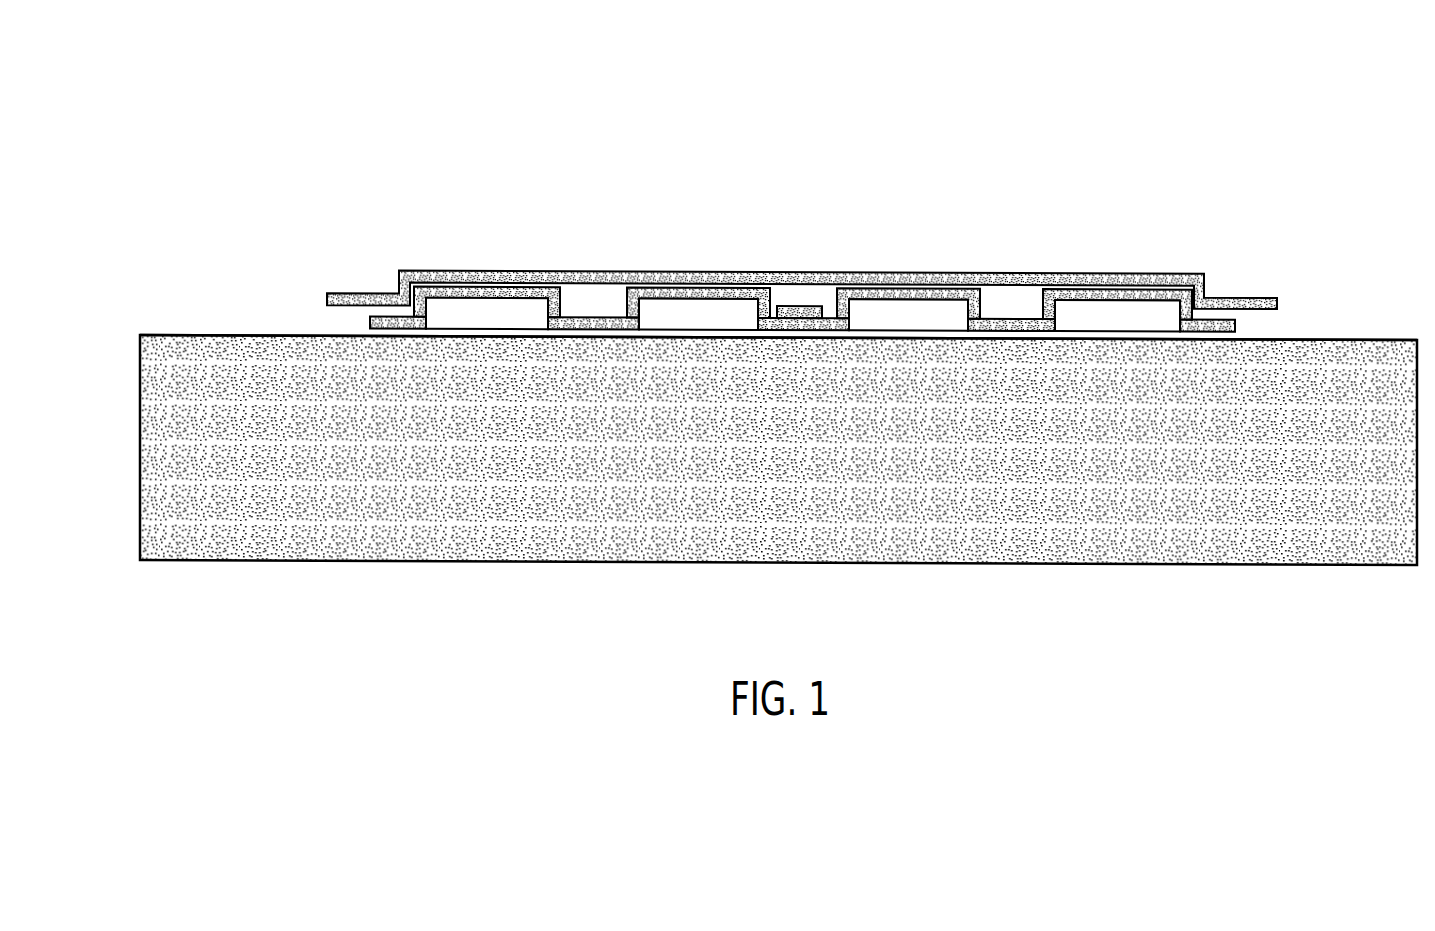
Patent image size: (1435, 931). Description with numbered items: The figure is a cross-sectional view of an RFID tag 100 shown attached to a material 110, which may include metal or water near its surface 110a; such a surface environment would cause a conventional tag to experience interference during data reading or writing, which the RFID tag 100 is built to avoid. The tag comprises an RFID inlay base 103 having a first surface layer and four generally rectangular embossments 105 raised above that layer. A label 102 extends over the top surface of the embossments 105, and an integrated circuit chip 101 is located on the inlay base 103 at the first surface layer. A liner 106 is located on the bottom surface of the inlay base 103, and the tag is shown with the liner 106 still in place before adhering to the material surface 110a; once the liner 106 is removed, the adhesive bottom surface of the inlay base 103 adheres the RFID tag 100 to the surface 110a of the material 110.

The RFID tag 100 is at (1068, 96).
The integrated circuit chip 101 is at (800, 302).
The label 102 is at (420, 266).
The RFID inlay base 103 is at (831, 299).
The embossments 105 is at (501, 292).
The liner 106 is at (1122, 328).
The material 110 is at (811, 461).
The surface 110a is at (213, 333).